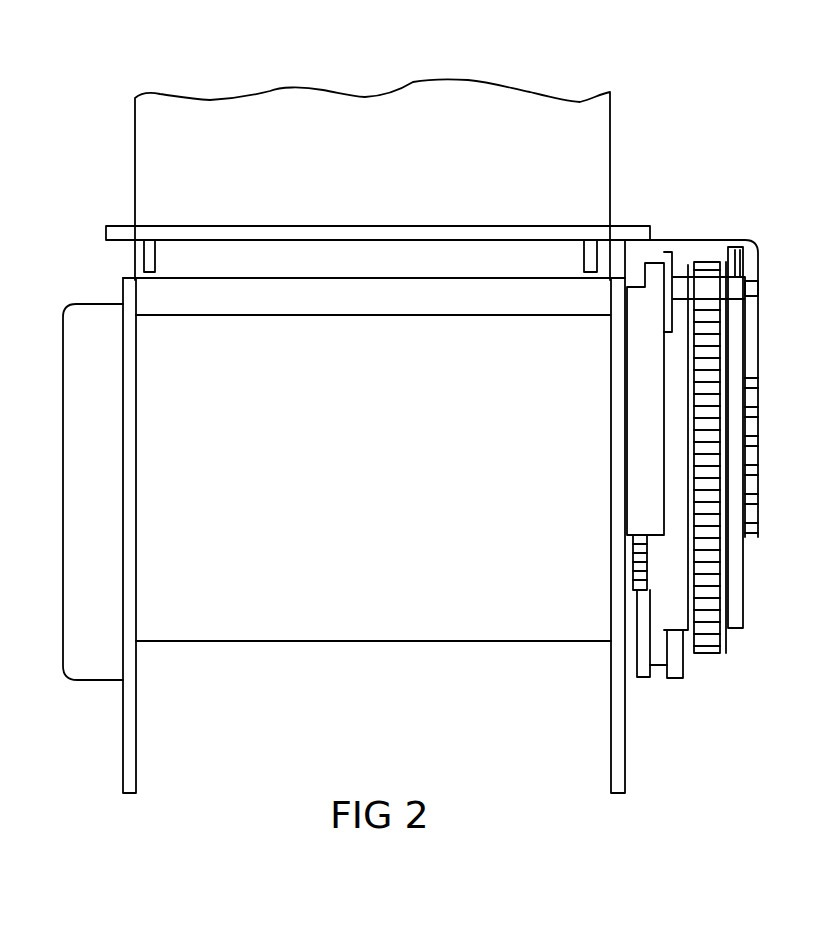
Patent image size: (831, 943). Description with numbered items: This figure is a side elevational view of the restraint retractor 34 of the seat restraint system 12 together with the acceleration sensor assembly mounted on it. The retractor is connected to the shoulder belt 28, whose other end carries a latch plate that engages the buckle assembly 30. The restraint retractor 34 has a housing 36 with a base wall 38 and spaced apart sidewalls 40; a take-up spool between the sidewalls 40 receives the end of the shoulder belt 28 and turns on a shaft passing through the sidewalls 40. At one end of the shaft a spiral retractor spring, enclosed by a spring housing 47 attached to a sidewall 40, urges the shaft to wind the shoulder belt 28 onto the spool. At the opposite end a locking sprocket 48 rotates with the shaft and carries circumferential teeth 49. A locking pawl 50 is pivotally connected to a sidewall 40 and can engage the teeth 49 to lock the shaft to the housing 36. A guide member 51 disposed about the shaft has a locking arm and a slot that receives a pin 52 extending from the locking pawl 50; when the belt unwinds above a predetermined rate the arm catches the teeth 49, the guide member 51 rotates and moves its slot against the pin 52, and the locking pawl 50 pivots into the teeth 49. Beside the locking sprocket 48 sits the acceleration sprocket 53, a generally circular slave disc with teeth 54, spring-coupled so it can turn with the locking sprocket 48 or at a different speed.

The seat restraint system 12 is at (120, 114).
The shoulder belt 28 is at (432, 103).
The buckle assembly 30 is at (822, 93).
The restraint retractor 34 is at (110, 278).
The housing 36 is at (693, 240).
The base wall 38 is at (710, 247).
The sidewalls 40 is at (131, 748).
The spring housing 47 is at (88, 348).
The locking sprocket 48 is at (633, 548).
The teeth 49 is at (638, 592).
The locking pawl 50 is at (637, 672).
The guide member 51 is at (645, 402).
The pin 52 is at (673, 667).
The acceleration sprocket 53 is at (726, 647).
The teeth 54 is at (705, 583).